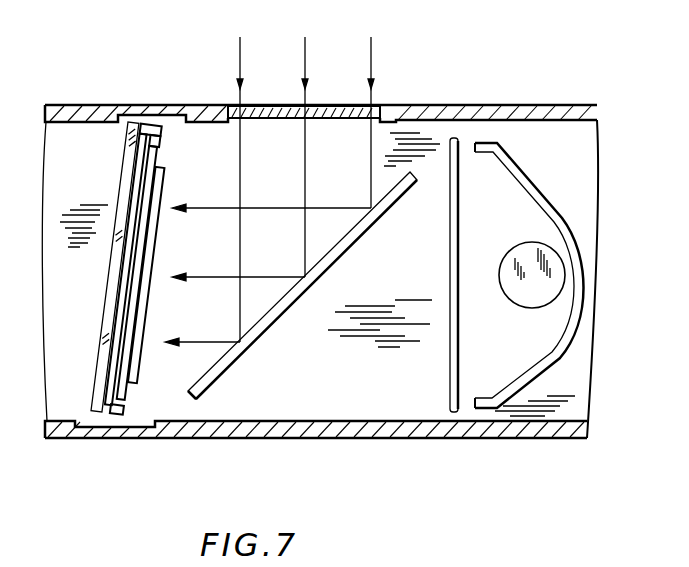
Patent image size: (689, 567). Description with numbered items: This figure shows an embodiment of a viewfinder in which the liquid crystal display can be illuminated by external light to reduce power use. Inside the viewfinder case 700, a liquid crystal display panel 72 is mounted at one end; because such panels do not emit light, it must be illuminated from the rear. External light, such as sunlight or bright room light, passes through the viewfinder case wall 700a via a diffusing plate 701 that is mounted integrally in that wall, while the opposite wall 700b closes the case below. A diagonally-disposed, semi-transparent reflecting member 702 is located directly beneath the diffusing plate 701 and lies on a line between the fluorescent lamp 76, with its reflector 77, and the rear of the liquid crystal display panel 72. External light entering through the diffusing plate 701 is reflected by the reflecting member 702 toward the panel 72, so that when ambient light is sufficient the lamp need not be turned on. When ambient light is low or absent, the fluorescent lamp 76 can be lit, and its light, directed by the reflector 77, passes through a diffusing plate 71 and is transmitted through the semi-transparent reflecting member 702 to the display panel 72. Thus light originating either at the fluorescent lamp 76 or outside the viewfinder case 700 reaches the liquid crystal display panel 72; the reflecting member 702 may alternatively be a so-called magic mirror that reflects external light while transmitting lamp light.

The viewfinder case 700 is at (112, 106).
The viewfinder case wall 700a is at (591, 107).
The bottom wall of housing 700b is at (566, 432).
The diffusing plate 701 is at (282, 107).
The semi-transparent reflecting member 702 is at (236, 355).
The diffusing plate 71 is at (452, 138).
The liquid crystal display panel 72 is at (150, 214).
The fluorescent lamp 76 is at (516, 296).
The reflector 77 is at (532, 362).